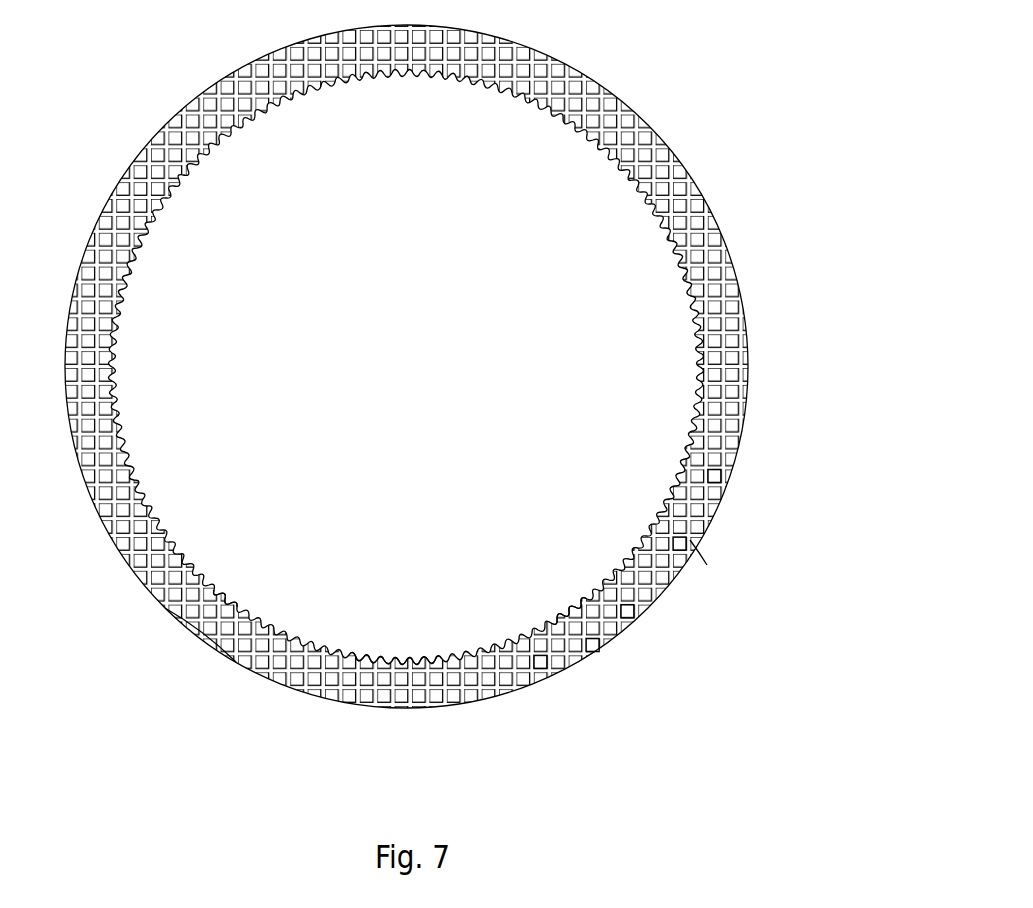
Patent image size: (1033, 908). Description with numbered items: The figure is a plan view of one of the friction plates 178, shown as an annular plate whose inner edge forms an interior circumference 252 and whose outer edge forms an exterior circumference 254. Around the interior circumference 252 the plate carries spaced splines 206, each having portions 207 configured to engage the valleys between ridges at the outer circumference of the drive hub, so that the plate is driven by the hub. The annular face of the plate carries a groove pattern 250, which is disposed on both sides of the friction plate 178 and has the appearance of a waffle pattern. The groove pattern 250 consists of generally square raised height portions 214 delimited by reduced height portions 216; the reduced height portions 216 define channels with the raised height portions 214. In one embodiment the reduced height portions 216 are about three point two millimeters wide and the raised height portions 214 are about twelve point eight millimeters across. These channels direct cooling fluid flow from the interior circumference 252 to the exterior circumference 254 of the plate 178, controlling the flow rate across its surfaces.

The friction plate 178 is at (662, 88).
The spaced splines 206 is at (562, 603).
The portions 207 is at (437, 653).
The raised height portions 214 is at (723, 470).
The reduced height portions 216 is at (697, 550).
The groove pattern 250 is at (638, 610).
The interior circumference 252 is at (228, 607).
The exterior circumference 254 is at (195, 642).